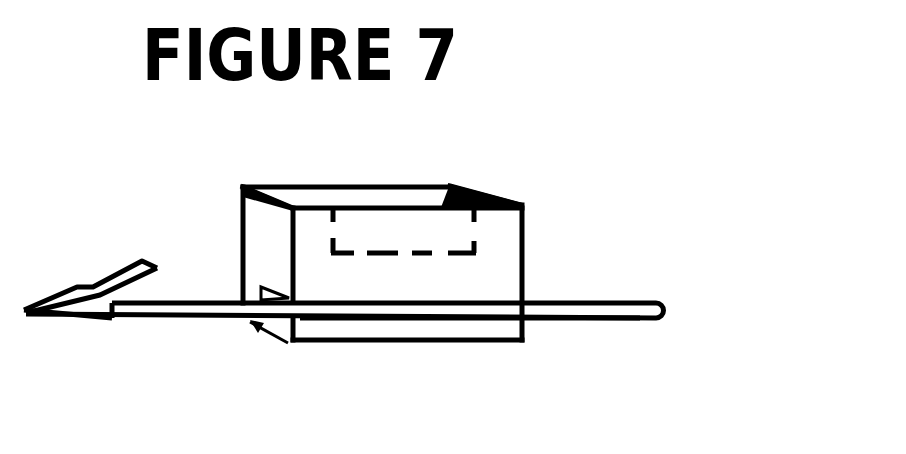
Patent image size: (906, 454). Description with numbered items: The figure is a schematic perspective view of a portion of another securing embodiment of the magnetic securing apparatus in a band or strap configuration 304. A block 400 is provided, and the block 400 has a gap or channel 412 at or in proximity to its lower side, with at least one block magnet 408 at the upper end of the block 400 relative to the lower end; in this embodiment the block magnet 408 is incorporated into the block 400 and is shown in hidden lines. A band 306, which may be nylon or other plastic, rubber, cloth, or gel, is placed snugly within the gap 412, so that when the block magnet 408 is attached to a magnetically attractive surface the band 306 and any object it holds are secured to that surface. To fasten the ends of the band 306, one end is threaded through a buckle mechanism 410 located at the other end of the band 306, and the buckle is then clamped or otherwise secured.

The block 400 is at (537, 267).
The block magnet 408 is at (455, 235).
The band or strap configuration 304 is at (557, 329).
The band 306 is at (597, 313).
The buckle mechanism 410 is at (62, 328).
The gap or channel 412 is at (276, 334).